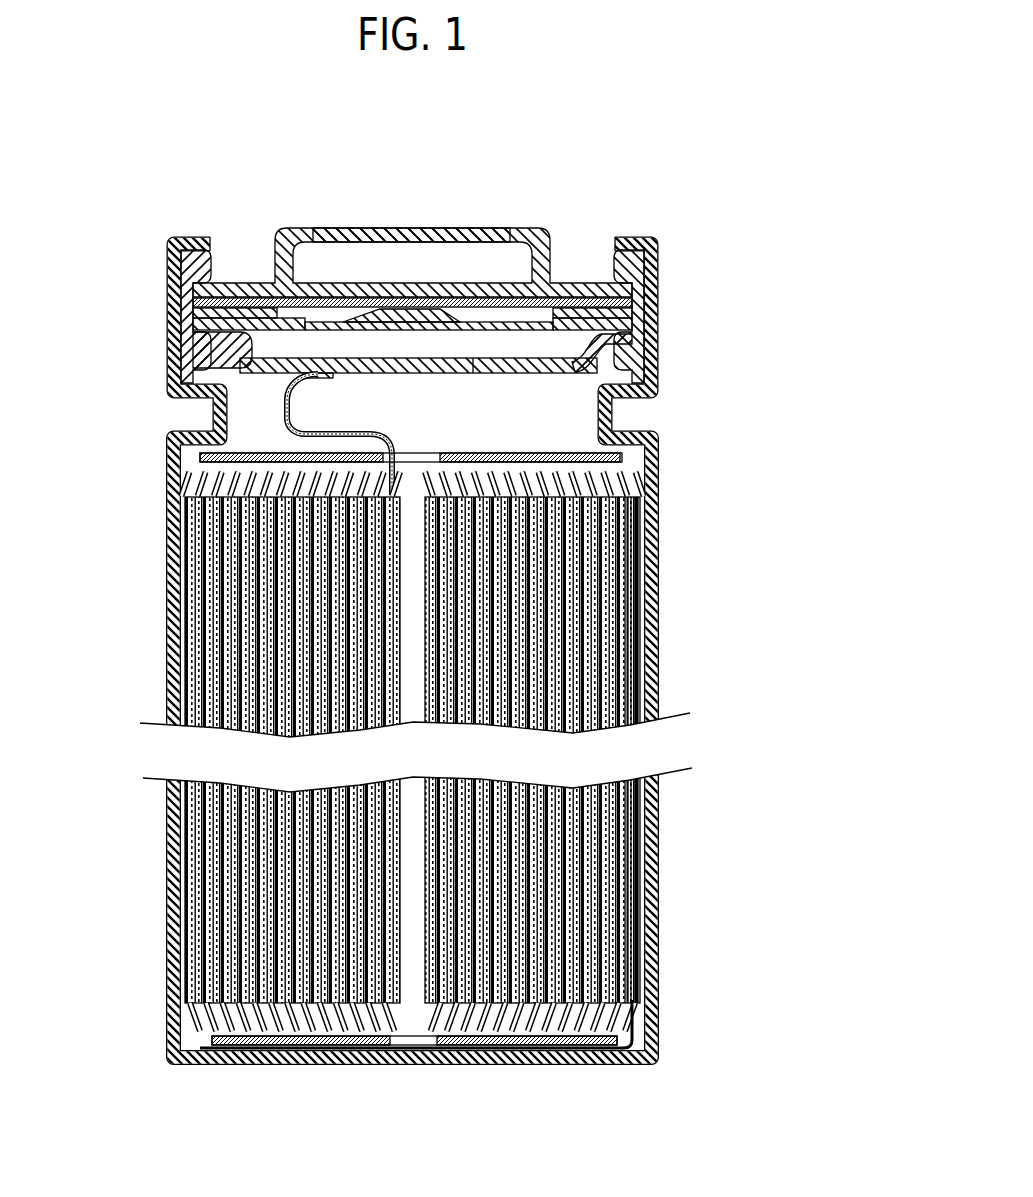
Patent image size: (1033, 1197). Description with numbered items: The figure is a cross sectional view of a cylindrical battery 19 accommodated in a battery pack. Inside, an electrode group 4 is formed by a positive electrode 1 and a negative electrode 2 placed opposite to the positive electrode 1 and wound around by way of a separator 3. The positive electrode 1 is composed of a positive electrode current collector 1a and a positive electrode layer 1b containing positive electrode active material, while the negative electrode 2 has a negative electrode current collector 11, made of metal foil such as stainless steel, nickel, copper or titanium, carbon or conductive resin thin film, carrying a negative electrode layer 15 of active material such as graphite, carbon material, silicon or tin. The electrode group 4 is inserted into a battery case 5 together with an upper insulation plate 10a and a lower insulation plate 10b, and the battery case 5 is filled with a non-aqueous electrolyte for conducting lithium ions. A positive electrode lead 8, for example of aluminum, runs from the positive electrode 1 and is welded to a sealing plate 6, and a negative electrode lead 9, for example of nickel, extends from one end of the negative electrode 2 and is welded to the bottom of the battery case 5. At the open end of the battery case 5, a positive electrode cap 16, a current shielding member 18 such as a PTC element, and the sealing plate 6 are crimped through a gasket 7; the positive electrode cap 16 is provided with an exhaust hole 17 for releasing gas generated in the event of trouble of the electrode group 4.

The positive electrode 1 is at (486, 737).
The positive electrode current collector 1a is at (637, 512).
The positive electrode layer 1b is at (637, 547).
The negative electrode 2 is at (490, 764).
The separator 3 is at (627, 473).
The electrode group 4 is at (514, 736).
The battery case 5 is at (658, 852).
The sealing plate 6 is at (613, 359).
The gasket 7 is at (633, 260).
The positive electrode lead 8 is at (290, 421).
The negative electrode lead 9 is at (630, 1025).
The upper insulation plate 10a is at (587, 450).
The lower insulation plate 10b is at (212, 1040).
The negative electrode current collector 11 is at (637, 613).
The negative electrode layer 15 is at (637, 580).
The positive electrode cap 16 is at (447, 233).
The exhaust hole 17 is at (537, 230).
The current shielding member 18 is at (627, 299).
The cylindrical battery 19 is at (455, 649).